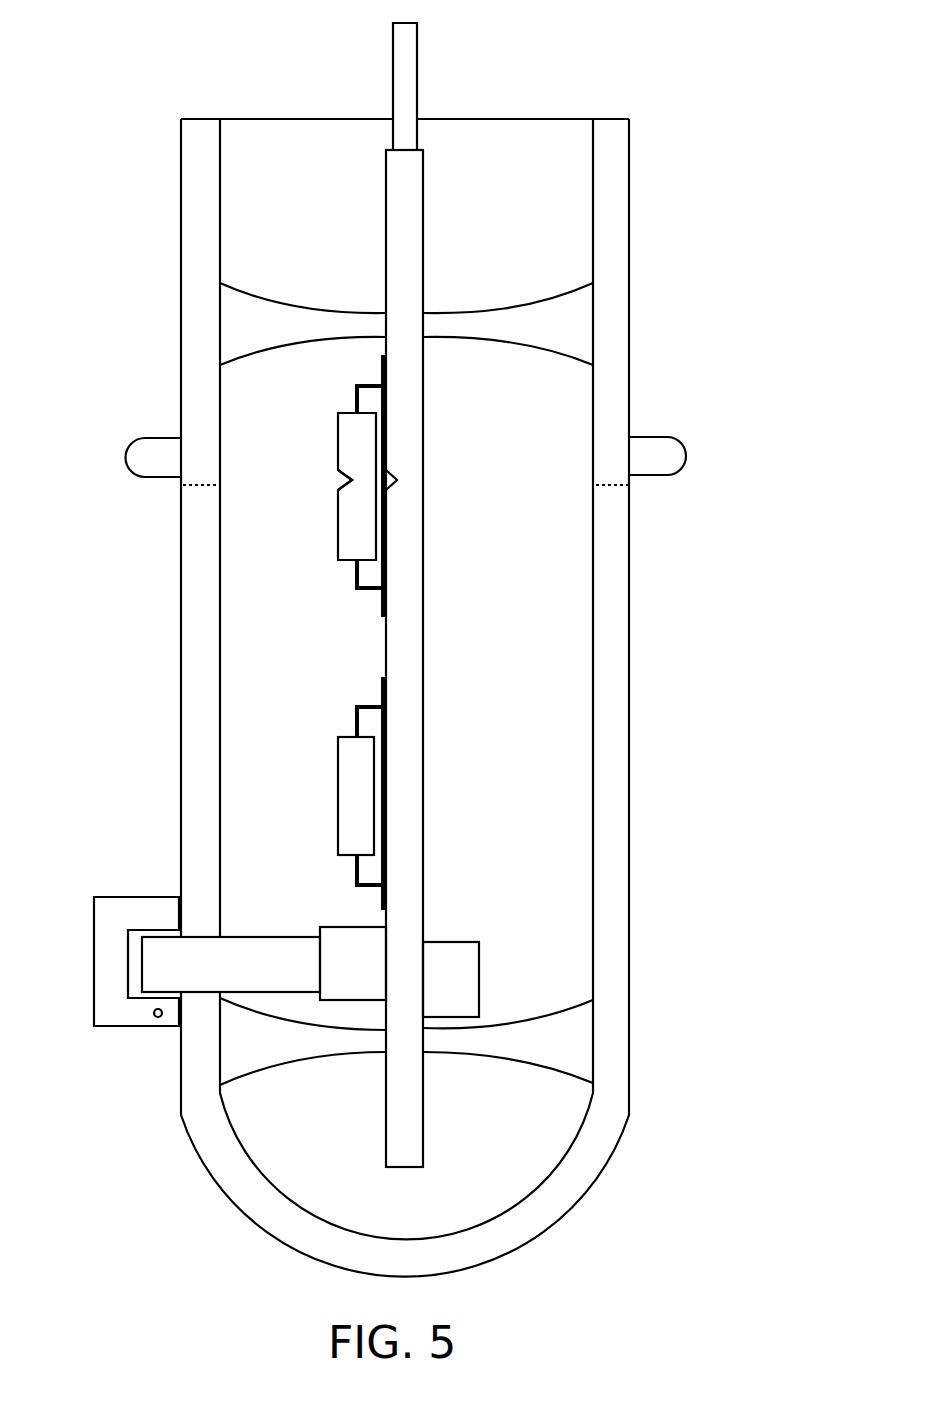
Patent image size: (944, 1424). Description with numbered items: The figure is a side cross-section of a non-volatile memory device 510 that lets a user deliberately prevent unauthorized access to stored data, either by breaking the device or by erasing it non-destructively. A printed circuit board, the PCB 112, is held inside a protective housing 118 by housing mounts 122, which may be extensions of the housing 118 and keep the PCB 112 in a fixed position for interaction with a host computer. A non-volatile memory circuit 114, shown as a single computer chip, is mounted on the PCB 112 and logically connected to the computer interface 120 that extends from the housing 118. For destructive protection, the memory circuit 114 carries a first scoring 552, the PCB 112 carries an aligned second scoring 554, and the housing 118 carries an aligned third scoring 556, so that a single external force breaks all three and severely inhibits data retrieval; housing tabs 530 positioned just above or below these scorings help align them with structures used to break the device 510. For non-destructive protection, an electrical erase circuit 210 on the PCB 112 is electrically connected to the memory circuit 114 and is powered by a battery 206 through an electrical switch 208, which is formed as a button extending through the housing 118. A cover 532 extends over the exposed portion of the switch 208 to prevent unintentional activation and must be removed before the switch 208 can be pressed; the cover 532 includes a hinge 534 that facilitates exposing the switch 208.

The non-volatile memory device 510 is at (108, 75).
The housing 118 is at (181, 790).
The housing mounts 122 is at (264, 327).
The PCB 112 is at (386, 280).
The computer interface 120 is at (423, 85).
The non-volatile memory circuit 114 is at (338, 432).
The first scoring 552 is at (350, 480).
The second scoring 554 is at (397, 479).
The electrical erase circuit 210 is at (338, 806).
The housing tabs 530 is at (172, 469).
The third scoring 556 is at (210, 487).
The cover 532 is at (157, 924).
The hinge 534 is at (155, 1017).
The electrical switch 208 is at (250, 976).
The battery 206 is at (471, 992).